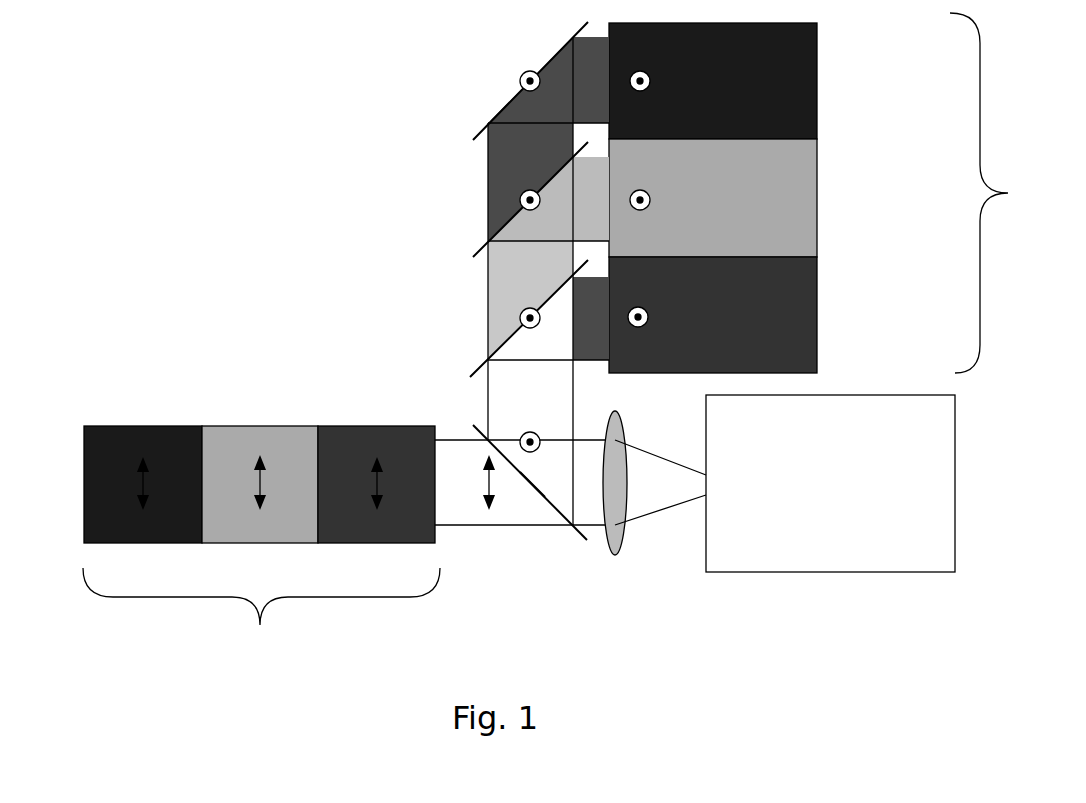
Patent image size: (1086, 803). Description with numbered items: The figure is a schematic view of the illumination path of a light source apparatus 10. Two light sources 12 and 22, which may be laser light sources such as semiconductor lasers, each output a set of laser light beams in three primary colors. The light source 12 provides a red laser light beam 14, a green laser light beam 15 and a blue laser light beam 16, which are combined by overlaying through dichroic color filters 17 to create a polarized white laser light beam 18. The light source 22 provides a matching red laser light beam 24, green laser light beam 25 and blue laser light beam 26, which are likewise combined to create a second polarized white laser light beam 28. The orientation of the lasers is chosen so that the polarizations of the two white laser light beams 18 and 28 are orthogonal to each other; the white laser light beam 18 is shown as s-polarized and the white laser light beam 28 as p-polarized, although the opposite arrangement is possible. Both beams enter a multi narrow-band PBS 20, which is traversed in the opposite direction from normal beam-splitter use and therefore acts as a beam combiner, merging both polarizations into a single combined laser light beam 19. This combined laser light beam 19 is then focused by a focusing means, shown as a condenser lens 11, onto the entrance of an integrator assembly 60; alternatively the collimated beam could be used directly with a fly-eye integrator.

The light source apparatus 10 is at (241, 159).
The condenser lens 11 is at (618, 543).
The light source 12 is at (1008, 193).
The red laser light beam 14 is at (795, 315).
The green laser light beam 15 is at (805, 208).
The blue laser light beam 16 is at (807, 90).
The dichroic color filters 17 is at (477, 138).
The polarized white laser light beam 18 is at (500, 423).
The combined laser light beam 19 is at (650, 477).
The multi narrow-band PBS 20 is at (525, 504).
The light source 22 is at (261, 624).
The red laser light beam 24 is at (393, 430).
The green laser light beam 25 is at (292, 438).
The blue laser light beam 26 is at (148, 427).
The polarized white laser light beam 28 is at (455, 490).
The integrator assembly 60 is at (830, 483).